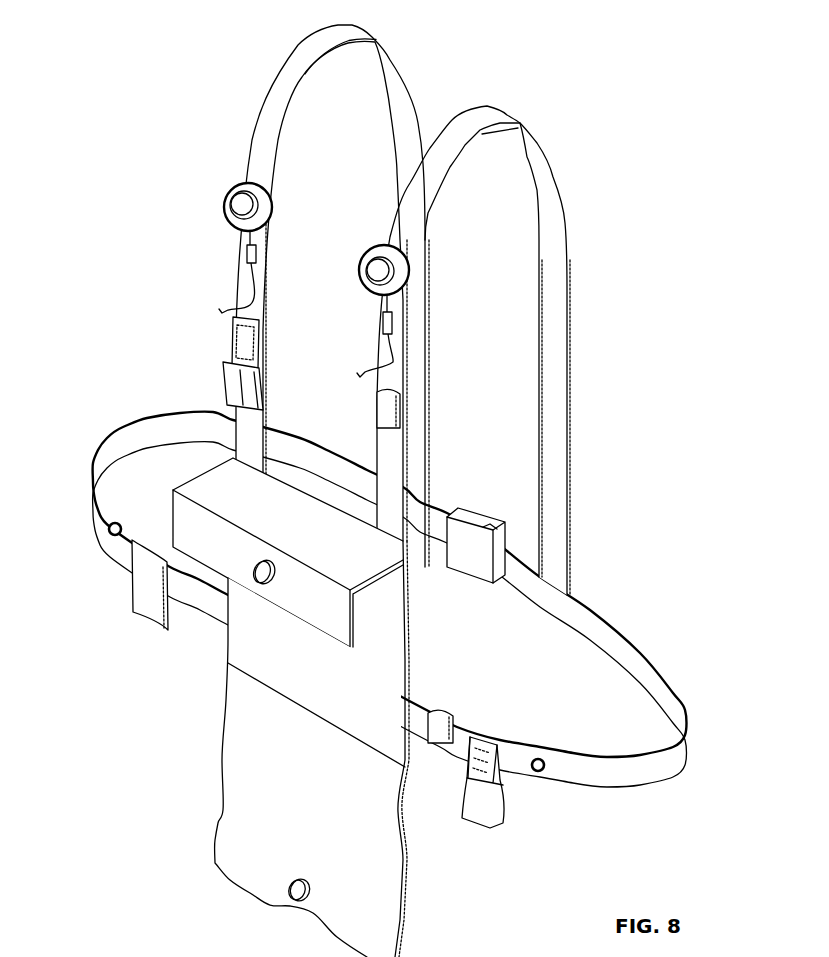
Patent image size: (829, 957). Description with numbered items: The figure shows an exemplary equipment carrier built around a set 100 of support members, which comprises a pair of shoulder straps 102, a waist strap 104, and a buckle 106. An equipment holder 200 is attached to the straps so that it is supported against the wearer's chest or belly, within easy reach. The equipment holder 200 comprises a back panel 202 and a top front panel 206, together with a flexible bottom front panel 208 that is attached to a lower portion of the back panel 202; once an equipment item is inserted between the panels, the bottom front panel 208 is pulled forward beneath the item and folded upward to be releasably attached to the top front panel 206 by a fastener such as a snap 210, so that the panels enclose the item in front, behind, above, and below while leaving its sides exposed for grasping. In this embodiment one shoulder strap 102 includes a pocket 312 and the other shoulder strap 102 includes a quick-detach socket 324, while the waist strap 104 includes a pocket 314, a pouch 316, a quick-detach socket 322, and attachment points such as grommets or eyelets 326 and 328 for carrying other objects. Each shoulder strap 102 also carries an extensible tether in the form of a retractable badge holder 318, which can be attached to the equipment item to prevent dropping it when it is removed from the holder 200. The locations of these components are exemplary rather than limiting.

The set of support members 100 is at (377, 448).
The shoulder straps 102 is at (396, 84).
The waist strap 104 is at (160, 430).
The buckle 106 is at (473, 537).
The equipment holder 200 is at (362, 696).
The back panel 202 is at (397, 647).
The top front panel 206 is at (212, 492).
The flexible bottom front panel 208 is at (388, 858).
The snap 210 is at (297, 882).
The pocket 312 is at (377, 410).
The pocket 314 is at (438, 740).
The pouch 316 is at (128, 595).
The badge holder 318 is at (377, 248).
The quick-detach socket 322 is at (490, 820).
The quick-detach socket 324 is at (230, 383).
The attachment point 326 is at (541, 772).
The attachment point 328 is at (107, 531).